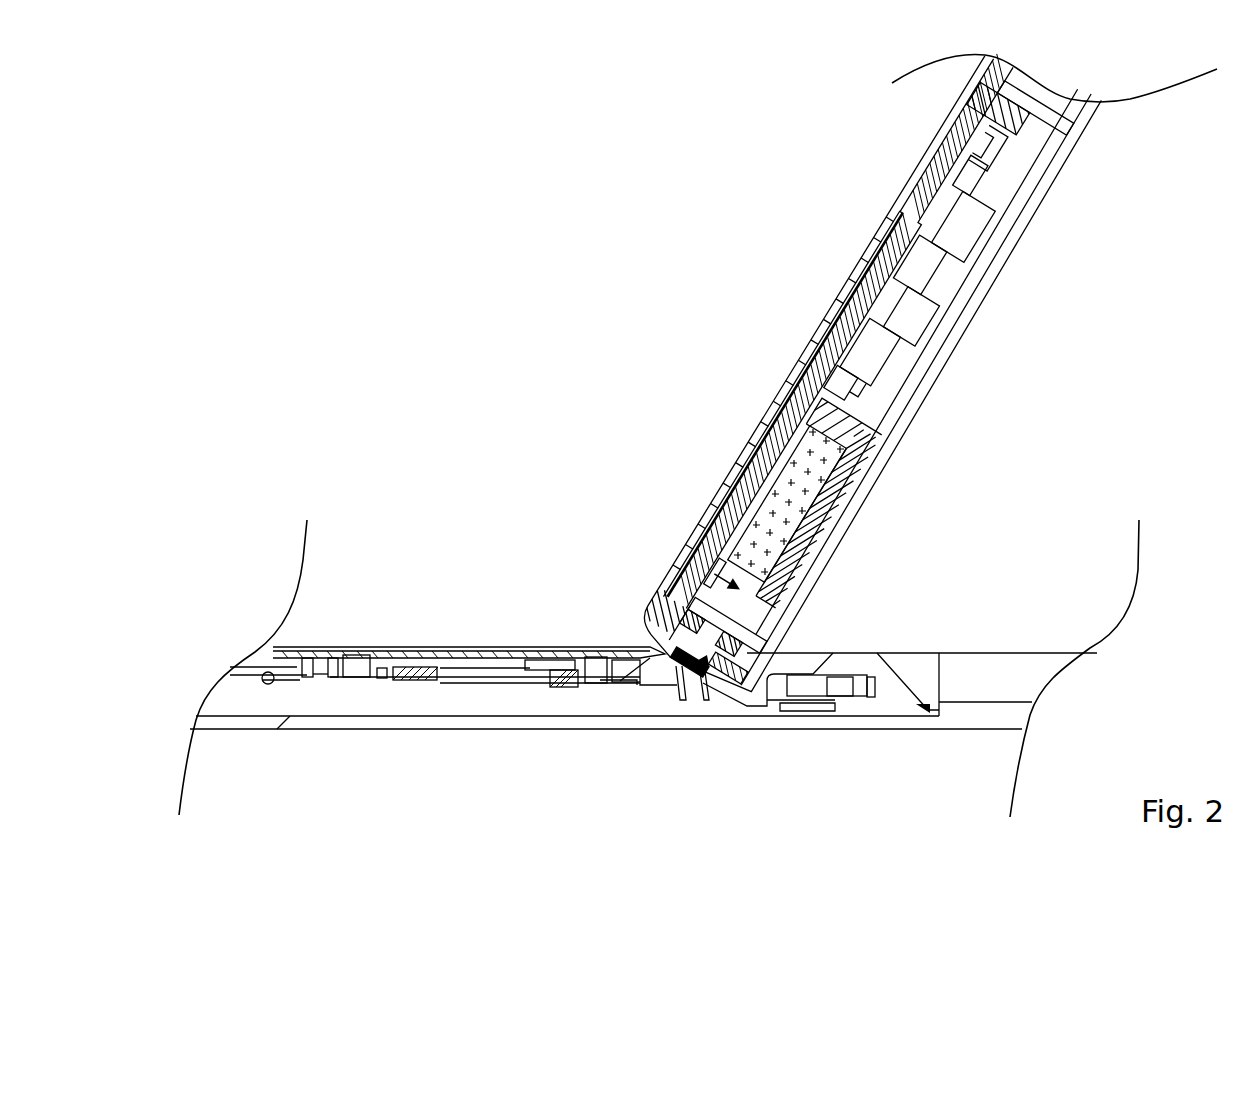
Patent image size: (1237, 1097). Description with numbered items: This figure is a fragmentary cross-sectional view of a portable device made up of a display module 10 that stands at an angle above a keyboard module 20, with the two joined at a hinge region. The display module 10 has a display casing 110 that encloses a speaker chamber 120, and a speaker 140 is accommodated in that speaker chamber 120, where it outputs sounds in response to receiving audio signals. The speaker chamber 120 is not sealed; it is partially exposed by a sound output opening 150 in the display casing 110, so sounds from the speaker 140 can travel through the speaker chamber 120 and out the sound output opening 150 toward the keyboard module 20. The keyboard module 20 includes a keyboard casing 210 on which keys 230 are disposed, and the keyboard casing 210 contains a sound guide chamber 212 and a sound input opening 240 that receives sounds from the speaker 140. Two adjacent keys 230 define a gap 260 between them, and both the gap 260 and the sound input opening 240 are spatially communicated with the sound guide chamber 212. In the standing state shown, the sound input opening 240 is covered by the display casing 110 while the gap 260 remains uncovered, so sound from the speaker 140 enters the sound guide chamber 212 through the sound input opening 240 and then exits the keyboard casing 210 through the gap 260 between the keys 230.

The display module 10 is at (1057, 173).
The keyboard module 20 is at (347, 729).
The display casing 110 is at (917, 190).
The speaker chamber 120 is at (715, 592).
The speaker 140 is at (800, 505).
The sound output opening 150 is at (762, 634).
The keyboard casing 210 is at (766, 712).
The sound guide chamber 212 is at (621, 704).
The keys 230 is at (280, 656).
The sound input opening 240 is at (689, 695).
The gap 260 is at (319, 642).